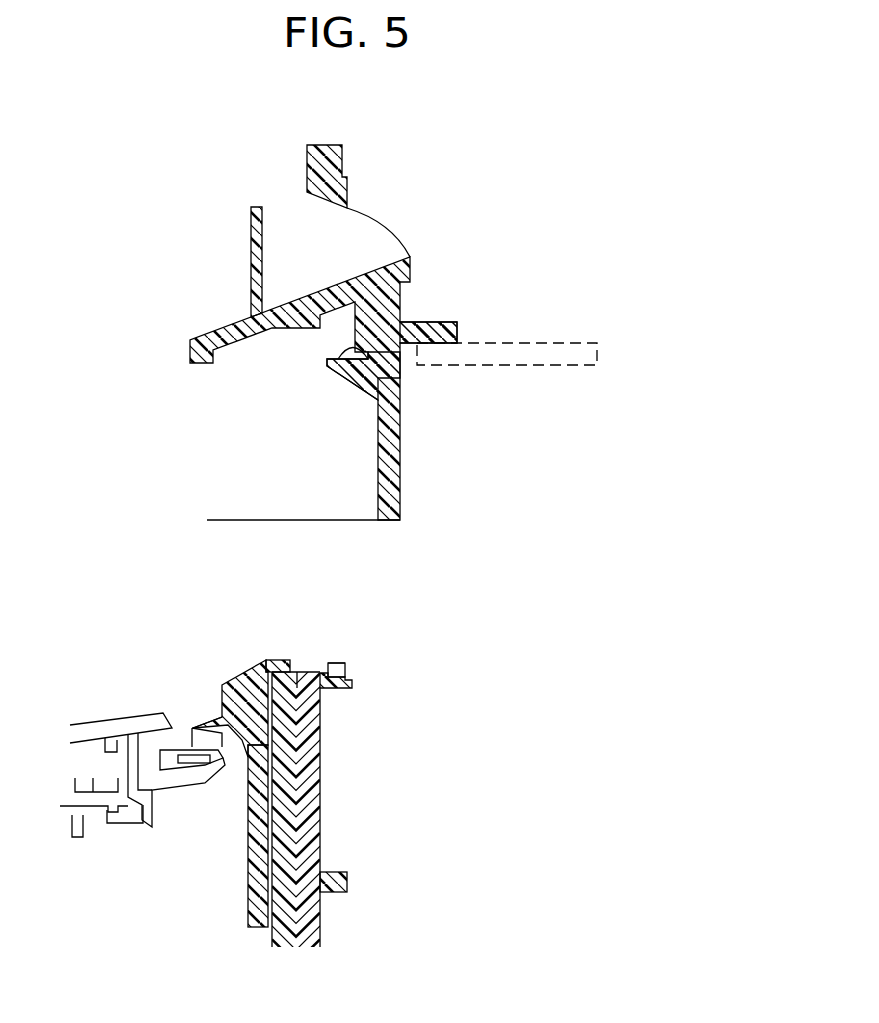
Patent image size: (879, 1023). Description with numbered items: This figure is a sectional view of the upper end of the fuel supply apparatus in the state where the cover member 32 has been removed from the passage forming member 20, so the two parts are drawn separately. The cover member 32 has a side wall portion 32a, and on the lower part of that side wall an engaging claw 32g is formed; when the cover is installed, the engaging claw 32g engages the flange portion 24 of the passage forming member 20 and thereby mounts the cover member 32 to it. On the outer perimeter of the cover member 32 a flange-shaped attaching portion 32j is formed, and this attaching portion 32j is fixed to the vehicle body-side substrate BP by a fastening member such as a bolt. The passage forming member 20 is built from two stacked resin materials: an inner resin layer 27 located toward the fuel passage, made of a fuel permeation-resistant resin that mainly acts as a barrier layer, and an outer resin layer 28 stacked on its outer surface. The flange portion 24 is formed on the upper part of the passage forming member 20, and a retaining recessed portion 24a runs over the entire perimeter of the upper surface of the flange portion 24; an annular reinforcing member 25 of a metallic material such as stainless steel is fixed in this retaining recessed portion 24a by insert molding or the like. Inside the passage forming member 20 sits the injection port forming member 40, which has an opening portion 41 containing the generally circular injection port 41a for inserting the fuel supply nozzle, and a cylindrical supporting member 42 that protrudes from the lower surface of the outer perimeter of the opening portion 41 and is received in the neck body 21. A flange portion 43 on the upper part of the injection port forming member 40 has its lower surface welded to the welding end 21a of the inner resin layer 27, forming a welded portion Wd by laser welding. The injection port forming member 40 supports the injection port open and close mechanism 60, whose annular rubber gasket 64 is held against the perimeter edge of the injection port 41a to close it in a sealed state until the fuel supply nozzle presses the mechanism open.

The cover member 32 is at (376, 332).
The side wall portion 32a is at (346, 186).
The attaching portion 32j is at (438, 322).
The engaging claw 32g is at (398, 380).
The vehicle body-side substrate BP is at (540, 343).
The passage forming member 20 is at (396, 813).
The neck body 21 is at (320, 800).
The welding end 21a is at (300, 688).
The flange portion 24 is at (350, 686).
The retaining recessed portion 24a is at (347, 665).
The reinforcing member 25 is at (335, 663).
The inner resin layer 27 is at (298, 943).
The outer resin layer 28 is at (320, 912).
The injection port forming member 40 is at (163, 775).
The opening portion 41 is at (257, 737).
The cylindrical supporting member 42 is at (248, 898).
The injection port 41a is at (183, 740).
The flange portion 43 is at (288, 660).
The welded portion Wd is at (264, 660).
The injection port open and close mechanism 60 is at (113, 713).
The gasket 64 is at (177, 742).